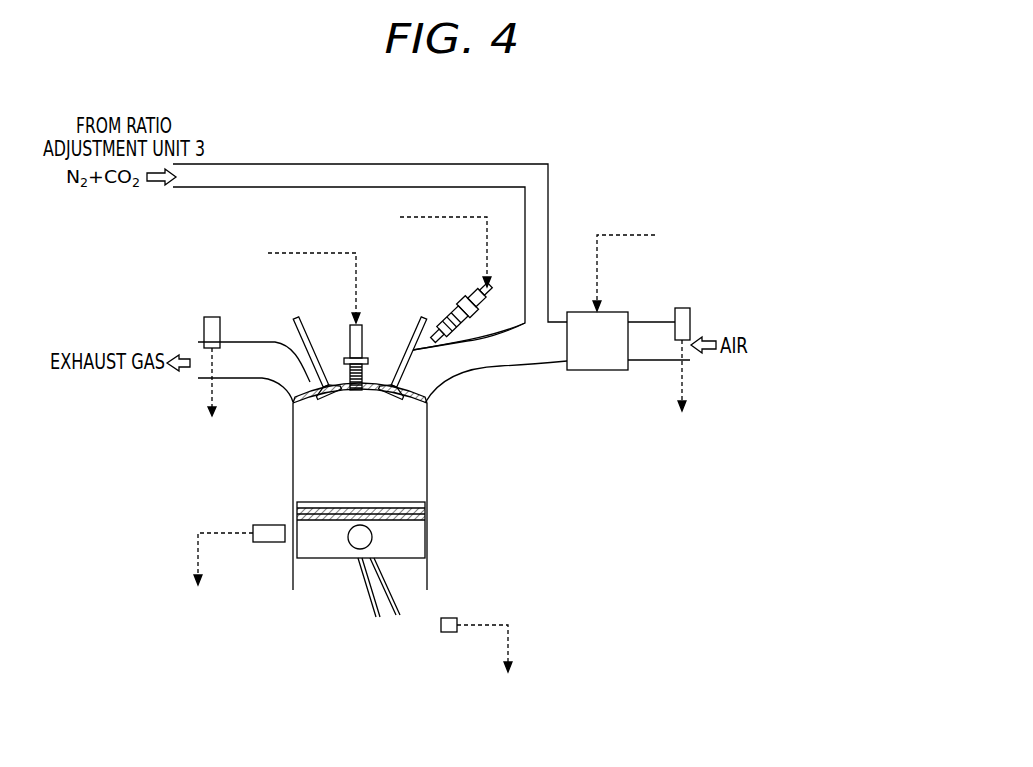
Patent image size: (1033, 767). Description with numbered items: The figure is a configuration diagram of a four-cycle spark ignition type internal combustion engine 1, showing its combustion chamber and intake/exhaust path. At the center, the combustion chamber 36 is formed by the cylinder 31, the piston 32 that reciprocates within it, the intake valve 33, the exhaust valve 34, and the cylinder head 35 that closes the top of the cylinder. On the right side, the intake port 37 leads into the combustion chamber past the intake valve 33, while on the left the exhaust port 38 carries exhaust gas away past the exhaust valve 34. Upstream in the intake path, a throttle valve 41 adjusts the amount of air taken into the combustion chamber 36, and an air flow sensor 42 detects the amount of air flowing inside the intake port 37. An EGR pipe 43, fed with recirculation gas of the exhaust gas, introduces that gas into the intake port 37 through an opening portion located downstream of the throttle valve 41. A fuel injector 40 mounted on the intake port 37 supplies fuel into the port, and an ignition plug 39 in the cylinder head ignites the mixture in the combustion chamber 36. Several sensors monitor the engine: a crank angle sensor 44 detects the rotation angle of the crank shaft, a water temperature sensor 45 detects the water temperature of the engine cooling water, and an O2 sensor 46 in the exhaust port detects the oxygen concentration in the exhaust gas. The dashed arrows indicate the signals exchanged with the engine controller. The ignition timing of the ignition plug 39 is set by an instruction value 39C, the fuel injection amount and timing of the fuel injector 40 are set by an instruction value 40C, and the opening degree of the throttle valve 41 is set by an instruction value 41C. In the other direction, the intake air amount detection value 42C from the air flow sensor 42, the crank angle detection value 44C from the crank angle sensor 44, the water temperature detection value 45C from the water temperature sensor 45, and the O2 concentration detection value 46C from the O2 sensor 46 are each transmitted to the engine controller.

The internal combustion engine 1 is at (595, 130).
The cylinder 31 is at (429, 474).
The piston 32 is at (423, 540).
The intake valve 33 is at (405, 314).
The exhaust valve 34 is at (285, 318).
The cylinder head 35 is at (430, 398).
The combustion chamber 36 is at (305, 465).
The intake port 37 is at (514, 368).
The exhaust port 38 is at (242, 383).
The ignition plug 39 is at (345, 318).
The fuel injector 40 is at (472, 297).
The throttle valve 41 is at (606, 372).
The air flow sensor 42 is at (688, 306).
The EGR pipe 43 is at (483, 162).
The crank angle sensor 44 is at (458, 618).
The water temperature sensor 45 is at (272, 547).
The O2 sensor 46 is at (202, 320).
The instruction value 39C is at (205, 282).
The instruction value 40C is at (338, 246).
The instruction value 41C is at (730, 267).
The intake air amount detection value 42C is at (686, 405).
The crank angle detection value 44C is at (507, 676).
The water temperature detection value 45C is at (188, 587).
The O2 concentration detection value 46C is at (200, 409).